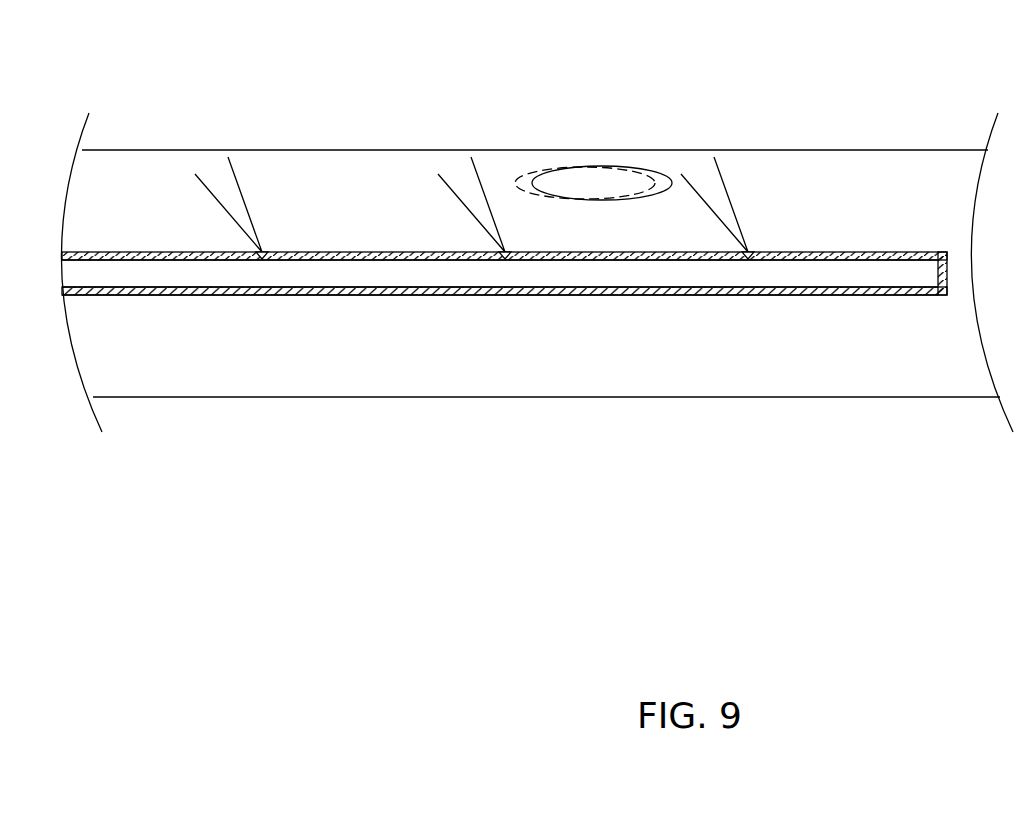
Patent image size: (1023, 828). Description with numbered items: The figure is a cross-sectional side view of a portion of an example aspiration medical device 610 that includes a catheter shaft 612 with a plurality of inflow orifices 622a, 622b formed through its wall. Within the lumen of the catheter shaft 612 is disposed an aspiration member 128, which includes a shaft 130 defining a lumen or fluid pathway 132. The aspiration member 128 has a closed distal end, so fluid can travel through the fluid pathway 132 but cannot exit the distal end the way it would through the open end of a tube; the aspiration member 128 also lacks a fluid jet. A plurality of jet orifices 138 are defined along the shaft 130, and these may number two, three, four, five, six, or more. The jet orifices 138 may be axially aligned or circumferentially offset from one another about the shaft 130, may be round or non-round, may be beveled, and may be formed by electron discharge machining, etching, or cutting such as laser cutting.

The medical device 610 is at (218, 80).
The catheter shaft 612 is at (372, 140).
The inflow orifice 622a is at (525, 173).
The inflow orifice 622b is at (658, 175).
The aspiration member 128 is at (623, 300).
The shaft 130 is at (278, 295).
The fluid pathway 132 is at (430, 273).
The jet orifices 138 is at (265, 253).